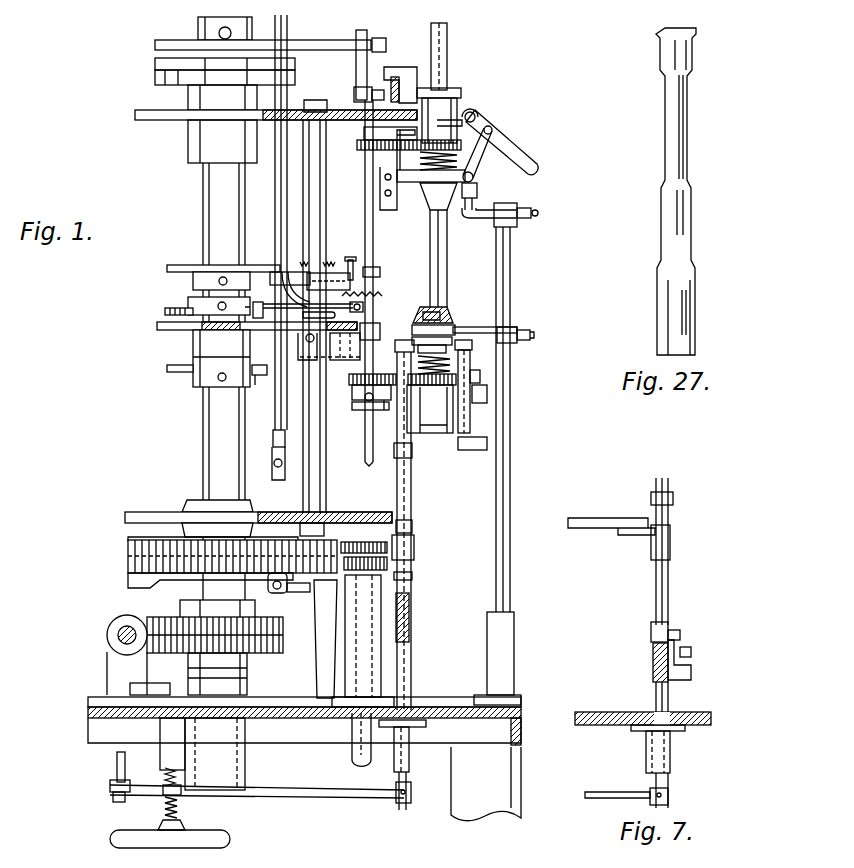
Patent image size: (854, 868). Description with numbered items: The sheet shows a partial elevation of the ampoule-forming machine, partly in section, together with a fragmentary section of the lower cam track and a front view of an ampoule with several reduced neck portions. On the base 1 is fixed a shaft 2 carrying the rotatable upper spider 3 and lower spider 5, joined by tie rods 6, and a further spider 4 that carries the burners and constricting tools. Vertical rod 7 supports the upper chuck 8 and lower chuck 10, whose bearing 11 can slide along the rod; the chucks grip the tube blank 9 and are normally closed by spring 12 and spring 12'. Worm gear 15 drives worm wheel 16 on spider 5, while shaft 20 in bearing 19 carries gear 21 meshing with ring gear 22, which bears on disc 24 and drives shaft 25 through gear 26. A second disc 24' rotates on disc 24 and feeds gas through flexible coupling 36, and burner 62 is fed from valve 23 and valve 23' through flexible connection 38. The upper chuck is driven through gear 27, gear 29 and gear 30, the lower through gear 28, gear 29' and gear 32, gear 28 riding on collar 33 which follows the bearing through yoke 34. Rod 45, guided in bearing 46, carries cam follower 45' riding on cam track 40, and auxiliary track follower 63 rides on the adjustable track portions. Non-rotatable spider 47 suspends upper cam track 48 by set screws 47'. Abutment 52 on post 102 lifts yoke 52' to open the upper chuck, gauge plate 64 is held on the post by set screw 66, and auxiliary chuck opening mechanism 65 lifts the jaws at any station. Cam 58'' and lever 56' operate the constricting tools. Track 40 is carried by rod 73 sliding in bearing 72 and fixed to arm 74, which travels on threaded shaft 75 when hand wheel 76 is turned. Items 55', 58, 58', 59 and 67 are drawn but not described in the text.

In FIG. 1, the base 1 is at (437, 708).
In FIG. 1, the shaft 2 is at (203, 457).
In FIG. 1, the upper spider 3 is at (160, 112).
In FIG. 1, the spider 4 is at (170, 330).
In FIG. 1, the lower spider 5 is at (152, 512).
In FIG. 1, the tie rods 6 is at (326, 196).
In FIG. 1, the vertical rod 7 is at (411, 490).
In FIG. 1, the upper chuck 8 is at (430, 206).
In FIG. 1, the tube blank 9 is at (447, 55).
In FIG. 1, the lower chuck 10 is at (452, 327).
In FIG. 1, the bearing 11 is at (450, 433).
In FIG. 1, the spring 12 is at (482, 363).
In FIG. 1, the spring 12' is at (486, 157).
In FIG. 1, the worm gear 15 is at (108, 638).
In FIG. 1, the worm wheel 16 is at (262, 653).
In FIG. 1, the bearing 19 is at (381, 667).
In FIG. 1, the shaft 20 is at (355, 760).
In FIG. 1, the gear 21 is at (400, 567).
In FIG. 1, the ring gear 22 is at (128, 567).
In FIG. 1, the valve 23 is at (202, 59).
In FIG. 1, the valve 23' is at (202, 80).
In FIG. 1, the disc 24 is at (196, 605).
In FIG. 1, the second disc 24' is at (193, 528).
In FIG. 1, the shaft 25 is at (368, 470).
In FIG. 1, the gear 26 is at (414, 545).
In FIG. 1, the gear 27 is at (361, 143).
In FIG. 1, the gear 28 is at (349, 390).
In FIG. 1, the gear 29 is at (397, 170).
In FIG. 1, the gear 29' is at (374, 369).
In FIG. 1, the gear 30 is at (498, 140).
In FIG. 1, the gear 32 is at (456, 377).
In FIG. 1, the collar 33 is at (358, 410).
In FIG. 1, the yoke 34 is at (387, 410).
In FIG. 1, the flexible coupling 36 is at (274, 406).
In FIG. 1, the flexible connection 38 is at (277, 212).
In FIG. 1, the bearing 46 is at (413, 527).
In FIG. 1, the non-rotatable spider 47 is at (263, 37).
In FIG. 1, the set screws 47' is at (378, 56).
In FIG. 1, the upper cam track 48 is at (404, 80).
In FIG. 1, the abutment 52 is at (494, 196).
In FIG. 1, the yoke 52' is at (498, 221).
In FIG. 1, the stop 55' is at (254, 390).
In FIG. 1, the lever 56' is at (303, 346).
In FIG. 1, the bolt 58 is at (239, 307).
In FIG. 1, the upper bar 58' is at (205, 275).
In FIG. 1, the cam 58'' is at (211, 381).
In FIG. 1, the latch 59 is at (353, 260).
In FIG. 1, the burner 62 is at (445, 305).
In FIG. 1, the gauge plate 64 is at (490, 326).
In FIG. 1, the auxiliary chuck opening mechanism 65 is at (531, 160).
In FIG. 1, the set screw 66 is at (531, 334).
In FIG. 1, the cap 67 is at (452, 317).
In FIG. 1, the bearing 72 is at (411, 735).
In FIG. 7, the bearing 72 is at (648, 754).
In FIG. 1, the rod 73 is at (408, 778).
In FIG. 7, the rod 73 is at (670, 781).
In FIG. 1, the arm 74 is at (350, 798).
In FIG. 7, the arm 74 is at (608, 792).
In FIG. 1, the threaded shaft 75 is at (162, 814).
In FIG. 1, the hand wheel 76 is at (232, 840).
In FIG. 1, the post 102 is at (510, 470).
In FIG. 7, the rod 45 is at (635, 551).
In FIG. 7, the cam follower 45' is at (651, 661).
In FIG. 7, the cam track 40 is at (654, 680).
In FIG. 7, the auxiliary track follower 63 is at (676, 630).